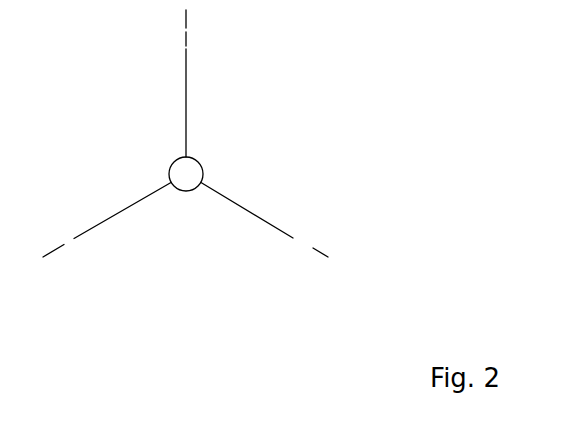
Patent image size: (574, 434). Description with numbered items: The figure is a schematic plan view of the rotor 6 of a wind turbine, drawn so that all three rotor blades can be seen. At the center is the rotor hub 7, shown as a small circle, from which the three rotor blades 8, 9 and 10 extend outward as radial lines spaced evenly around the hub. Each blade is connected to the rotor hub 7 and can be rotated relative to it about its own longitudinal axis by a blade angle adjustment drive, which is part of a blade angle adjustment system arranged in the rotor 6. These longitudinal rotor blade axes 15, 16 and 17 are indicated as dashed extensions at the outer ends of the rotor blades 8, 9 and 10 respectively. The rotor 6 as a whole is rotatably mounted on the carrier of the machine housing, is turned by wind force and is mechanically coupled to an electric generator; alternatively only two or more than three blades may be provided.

The rotor 6 is at (309, 62).
The rotor hub 7 is at (197, 172).
The rotor blade 8 is at (113, 217).
The rotor blade 9 is at (186, 91).
The rotor blade 10 is at (248, 212).
The rotor blade axis 15 is at (72, 240).
The rotor blade axis 16 is at (183, 38).
The rotor blade axis 17 is at (303, 240).